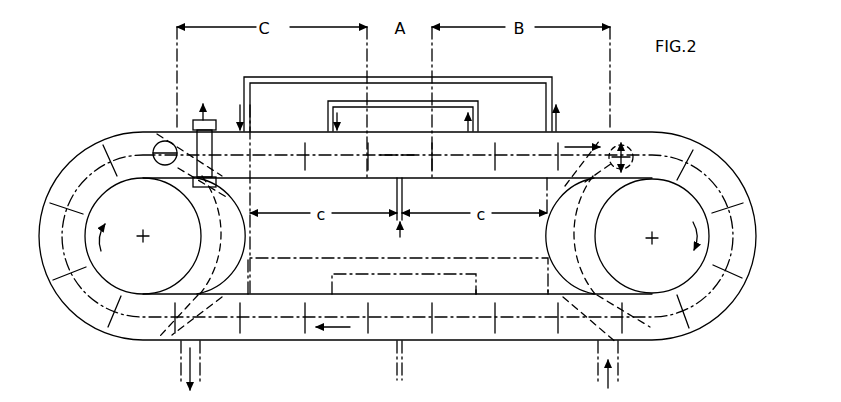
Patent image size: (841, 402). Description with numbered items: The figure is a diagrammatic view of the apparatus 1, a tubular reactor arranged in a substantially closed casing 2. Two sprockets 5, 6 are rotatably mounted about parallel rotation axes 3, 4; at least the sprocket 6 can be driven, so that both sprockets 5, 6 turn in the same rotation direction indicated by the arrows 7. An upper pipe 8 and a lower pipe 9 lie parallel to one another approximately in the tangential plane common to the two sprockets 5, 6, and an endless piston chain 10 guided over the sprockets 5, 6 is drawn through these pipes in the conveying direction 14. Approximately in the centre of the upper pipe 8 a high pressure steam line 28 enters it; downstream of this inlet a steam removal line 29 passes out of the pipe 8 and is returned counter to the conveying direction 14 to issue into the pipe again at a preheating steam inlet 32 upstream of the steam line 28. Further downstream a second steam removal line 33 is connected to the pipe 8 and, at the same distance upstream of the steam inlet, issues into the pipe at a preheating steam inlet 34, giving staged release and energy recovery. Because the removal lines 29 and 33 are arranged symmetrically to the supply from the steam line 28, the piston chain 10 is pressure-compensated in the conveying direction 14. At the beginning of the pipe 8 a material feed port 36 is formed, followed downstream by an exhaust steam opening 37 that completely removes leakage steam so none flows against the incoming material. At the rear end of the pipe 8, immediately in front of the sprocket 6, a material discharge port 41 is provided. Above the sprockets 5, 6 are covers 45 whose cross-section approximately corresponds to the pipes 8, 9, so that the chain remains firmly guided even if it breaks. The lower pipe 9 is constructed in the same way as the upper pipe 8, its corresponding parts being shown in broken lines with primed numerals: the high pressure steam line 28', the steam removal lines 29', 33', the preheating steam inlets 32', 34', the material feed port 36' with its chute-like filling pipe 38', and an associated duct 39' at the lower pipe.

The conveyor installation 1 is at (393, 165).
The endless belt 2 is at (660, 132).
The rotation axis 3 is at (146, 239).
The rotation axis 4 is at (650, 241).
The sprocket 5 is at (183, 242).
The sprocket 6 is at (607, 233).
The arrows 7 is at (104, 238).
The upper pipe 8 is at (505, 131).
The lower pipe 9 is at (537, 341).
The piston chain 10 is at (474, 322).
The conveying direction 14 is at (578, 145).
The high pressure steam line 28 is at (418, 207).
The high pressure steam line 28' is at (382, 360).
The steam removal line 29 is at (404, 88).
The steam removal line 29' is at (404, 262).
The preheating steam inlet 32 is at (316, 115).
The preheating steam inlet 32' is at (491, 281).
The steam removal line 33 is at (400, 88).
The steam removal line 33' is at (398, 262).
The preheating steam inlet 34 is at (260, 116).
The preheating steam inlet 34' is at (534, 281).
The material feed port 36 is at (145, 118).
The material feed port 36' is at (630, 364).
The exhaust steam opening 37 is at (205, 132).
The filling pipe 38' is at (162, 361).
The lower exhaust duct 39' is at (215, 365).
The material discharge port 41 is at (621, 146).
The covers 45 is at (72, 162).